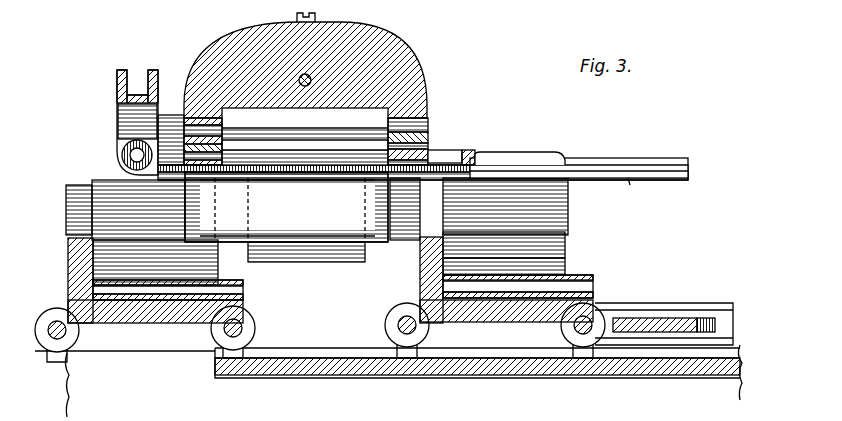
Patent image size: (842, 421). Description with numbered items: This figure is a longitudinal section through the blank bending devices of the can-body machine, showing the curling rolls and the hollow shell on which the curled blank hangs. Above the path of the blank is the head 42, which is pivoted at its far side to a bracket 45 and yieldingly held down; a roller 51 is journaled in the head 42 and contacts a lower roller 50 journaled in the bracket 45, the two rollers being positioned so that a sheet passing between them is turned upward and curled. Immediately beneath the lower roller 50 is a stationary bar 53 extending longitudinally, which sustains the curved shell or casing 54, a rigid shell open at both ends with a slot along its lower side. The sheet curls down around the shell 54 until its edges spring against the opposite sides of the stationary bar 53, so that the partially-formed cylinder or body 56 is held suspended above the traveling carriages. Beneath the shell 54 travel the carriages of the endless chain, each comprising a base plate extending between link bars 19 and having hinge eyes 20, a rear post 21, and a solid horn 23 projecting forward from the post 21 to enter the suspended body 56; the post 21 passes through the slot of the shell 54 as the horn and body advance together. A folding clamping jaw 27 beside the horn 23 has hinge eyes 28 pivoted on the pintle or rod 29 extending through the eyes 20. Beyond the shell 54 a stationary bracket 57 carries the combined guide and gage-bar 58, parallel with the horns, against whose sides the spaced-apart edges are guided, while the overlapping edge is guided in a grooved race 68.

The link bars 19 is at (462, 352).
The hinge eyes 20 is at (505, 300).
The post 21 is at (388, 283).
The solid horn 23 is at (317, 209).
The folding clamping jaw 27 is at (580, 258).
The hinge eyes 28 is at (540, 300).
The pintle or rod 29 is at (612, 280).
The head 42 is at (355, 35).
The bracket 45 is at (428, 143).
The roller 50 is at (428, 122).
The roller 51 is at (360, 118).
The stationary bar 53 is at (280, 172).
The curved shell or casing 54 is at (302, 217).
The partially-formed cylinder or body 56 is at (555, 248).
The stationary bracket 57 is at (483, 150).
The combined guide and gage-bar 58 is at (600, 158).
The grooved race 68 is at (641, 191).